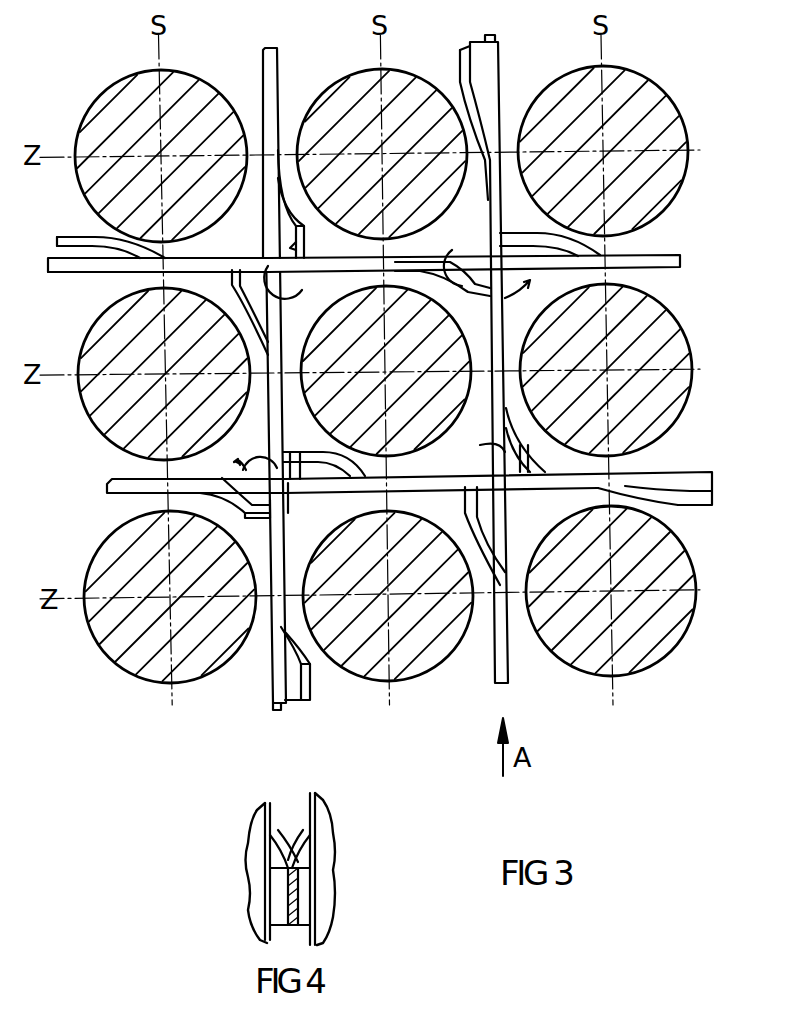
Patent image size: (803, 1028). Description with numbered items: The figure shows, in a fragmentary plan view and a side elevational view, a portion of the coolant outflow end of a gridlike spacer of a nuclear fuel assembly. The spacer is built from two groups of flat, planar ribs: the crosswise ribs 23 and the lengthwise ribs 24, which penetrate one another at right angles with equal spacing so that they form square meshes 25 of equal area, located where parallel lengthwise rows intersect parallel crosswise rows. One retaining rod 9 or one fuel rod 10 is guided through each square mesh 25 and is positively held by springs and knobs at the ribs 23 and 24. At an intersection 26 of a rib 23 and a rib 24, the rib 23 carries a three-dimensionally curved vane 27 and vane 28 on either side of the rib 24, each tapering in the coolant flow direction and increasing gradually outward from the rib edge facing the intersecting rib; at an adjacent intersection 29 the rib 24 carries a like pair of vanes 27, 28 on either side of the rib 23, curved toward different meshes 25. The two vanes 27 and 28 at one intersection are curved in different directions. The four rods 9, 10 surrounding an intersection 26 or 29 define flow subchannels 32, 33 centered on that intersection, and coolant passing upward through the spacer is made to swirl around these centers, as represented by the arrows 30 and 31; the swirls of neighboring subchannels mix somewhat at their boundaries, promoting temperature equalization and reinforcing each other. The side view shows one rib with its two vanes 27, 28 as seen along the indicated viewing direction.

In FIG. 3, the retaining rod 9 is at (98, 404).
In FIG. 3, the fuel rod 10 is at (412, 434).
In FIG. 4, the fuel rod 10 is at (250, 873).
In FIG. 3, the crosswise ribs 23 is at (278, 55).
In FIG. 4, the crosswise ribs 23 is at (267, 903).
In FIG. 3, the lengthwise ribs 24 is at (674, 268).
In FIG. 4, the lengthwise ribs 24 is at (307, 900).
In FIG. 3, the square meshes 25 is at (478, 318).
In FIG. 3, the intersection 26 is at (298, 281).
In FIG. 3, the vane 27 is at (292, 236).
In FIG. 4, the vane 27 is at (305, 812).
In FIG. 3, the vane 28 is at (480, 63).
In FIG. 4, the vane 28 is at (268, 815).
In FIG. 3, the adjacent intersection 29 is at (301, 512).
In FIG. 3, the arrow 30 is at (306, 236).
In FIG. 3, the arrow 31 is at (462, 242).
In FIG. 3, the flow subchannel 32 is at (118, 288).
In FIG. 3, the flow subchannel 33 is at (108, 481).